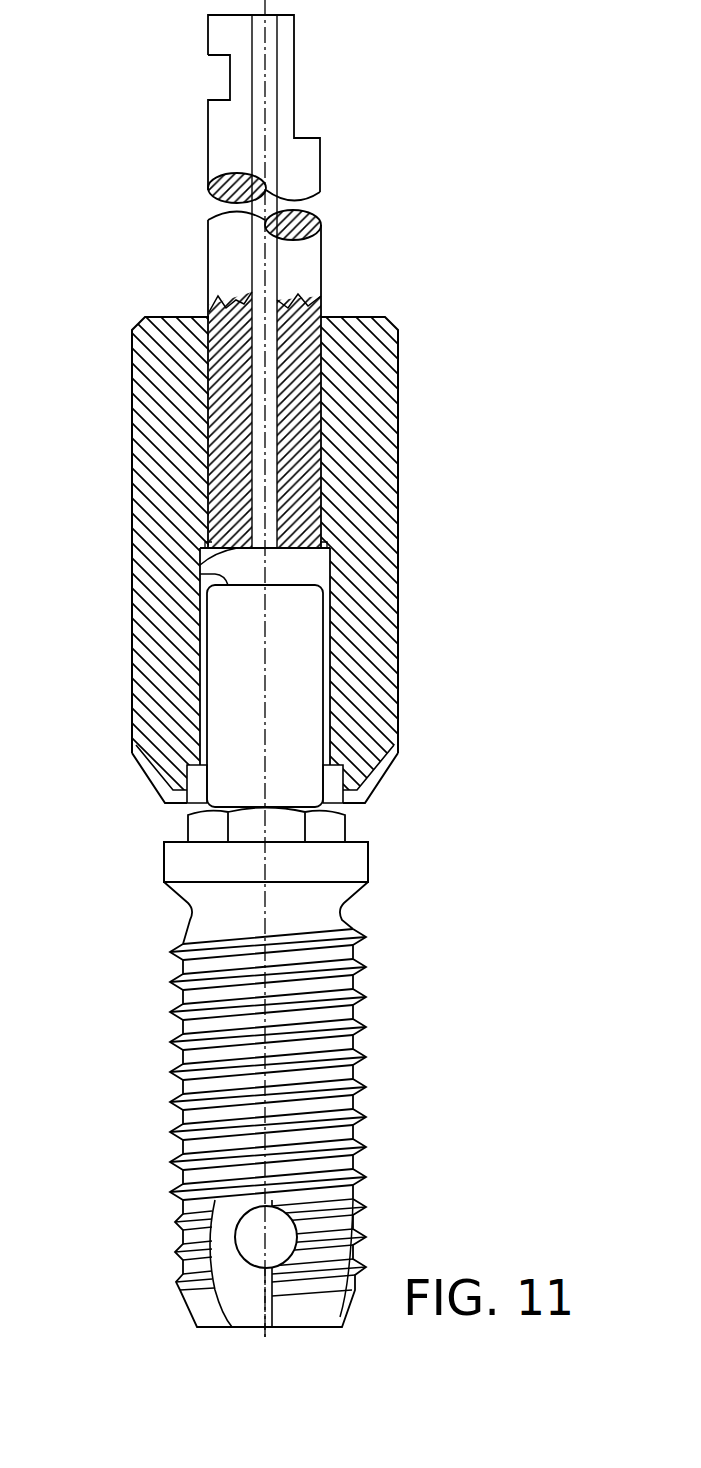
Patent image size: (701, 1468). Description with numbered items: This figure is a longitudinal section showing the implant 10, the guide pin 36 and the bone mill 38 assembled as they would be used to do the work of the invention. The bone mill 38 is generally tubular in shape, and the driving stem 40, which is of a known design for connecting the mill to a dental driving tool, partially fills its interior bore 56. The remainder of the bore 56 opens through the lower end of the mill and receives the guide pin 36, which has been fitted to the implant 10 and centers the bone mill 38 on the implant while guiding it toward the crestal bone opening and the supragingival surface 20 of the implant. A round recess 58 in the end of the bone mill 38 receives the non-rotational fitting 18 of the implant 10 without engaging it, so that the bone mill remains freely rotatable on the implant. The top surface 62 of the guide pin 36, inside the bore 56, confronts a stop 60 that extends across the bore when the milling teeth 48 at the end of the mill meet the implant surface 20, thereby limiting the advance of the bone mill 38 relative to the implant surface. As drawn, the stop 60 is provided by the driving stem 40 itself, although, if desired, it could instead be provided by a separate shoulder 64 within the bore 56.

The implant 10 is at (365, 1083).
The non-rotational fitting 18 is at (347, 827).
The supragingival surface 20 is at (355, 843).
The guide pin 36 is at (327, 683).
The bone mill 38 is at (398, 522).
The driving stem 40 is at (322, 265).
The milling teeth 48 is at (387, 770).
The interior bore 56 is at (332, 576).
The round recess 58 is at (203, 773).
The stop 60 is at (200, 572).
The top surface 62 is at (215, 575).
The shoulder 64 is at (200, 563).